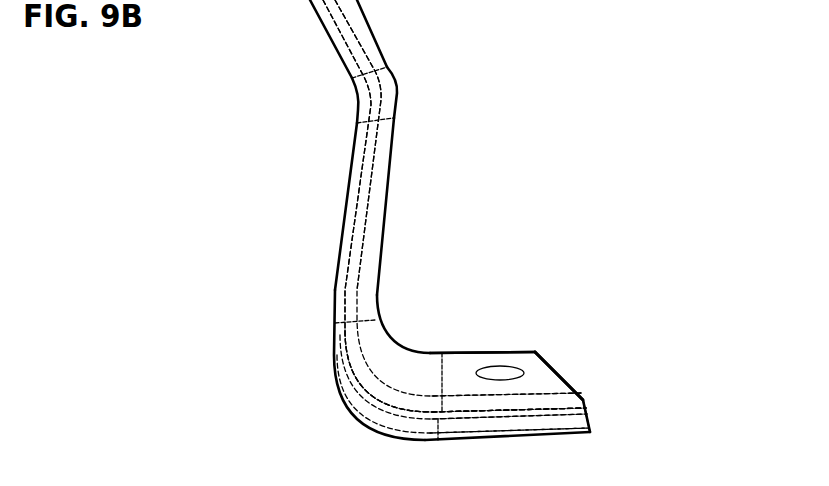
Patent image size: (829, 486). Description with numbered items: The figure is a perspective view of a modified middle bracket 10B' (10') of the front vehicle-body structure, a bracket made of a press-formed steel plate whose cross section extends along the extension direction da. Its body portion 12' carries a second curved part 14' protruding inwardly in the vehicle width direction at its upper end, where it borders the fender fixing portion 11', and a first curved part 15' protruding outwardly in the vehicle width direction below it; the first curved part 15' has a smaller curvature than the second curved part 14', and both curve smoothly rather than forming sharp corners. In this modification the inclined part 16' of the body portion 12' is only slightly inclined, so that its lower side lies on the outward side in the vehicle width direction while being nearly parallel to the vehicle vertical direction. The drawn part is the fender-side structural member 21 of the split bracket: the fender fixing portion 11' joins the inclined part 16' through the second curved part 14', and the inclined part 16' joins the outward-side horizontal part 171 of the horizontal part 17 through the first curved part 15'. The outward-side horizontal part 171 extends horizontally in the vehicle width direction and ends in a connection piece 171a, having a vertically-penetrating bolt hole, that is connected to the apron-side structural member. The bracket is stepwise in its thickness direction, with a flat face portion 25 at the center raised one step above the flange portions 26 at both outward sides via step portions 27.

The middle bracket 10B' is at (489, 220).
The bracket 10' is at (454, 206).
The fender fixing portion 11' is at (381, 39).
The second curved part 14' is at (408, 95).
The inclined part 16' is at (392, 206).
The first curved part 15' is at (390, 365).
The fender-side structural member 21 is at (490, 208).
The body portion 12' is at (465, 322).
The outward-side horizontal part 171 is at (468, 362).
The horizontal part 17 is at (468, 362).
The connection piece 171a is at (523, 352).
The flat face portion 25 is at (553, 382).
The step portion 27 is at (583, 418).
The flange portion 26 is at (577, 437).
The extension direction da is at (331, 236).